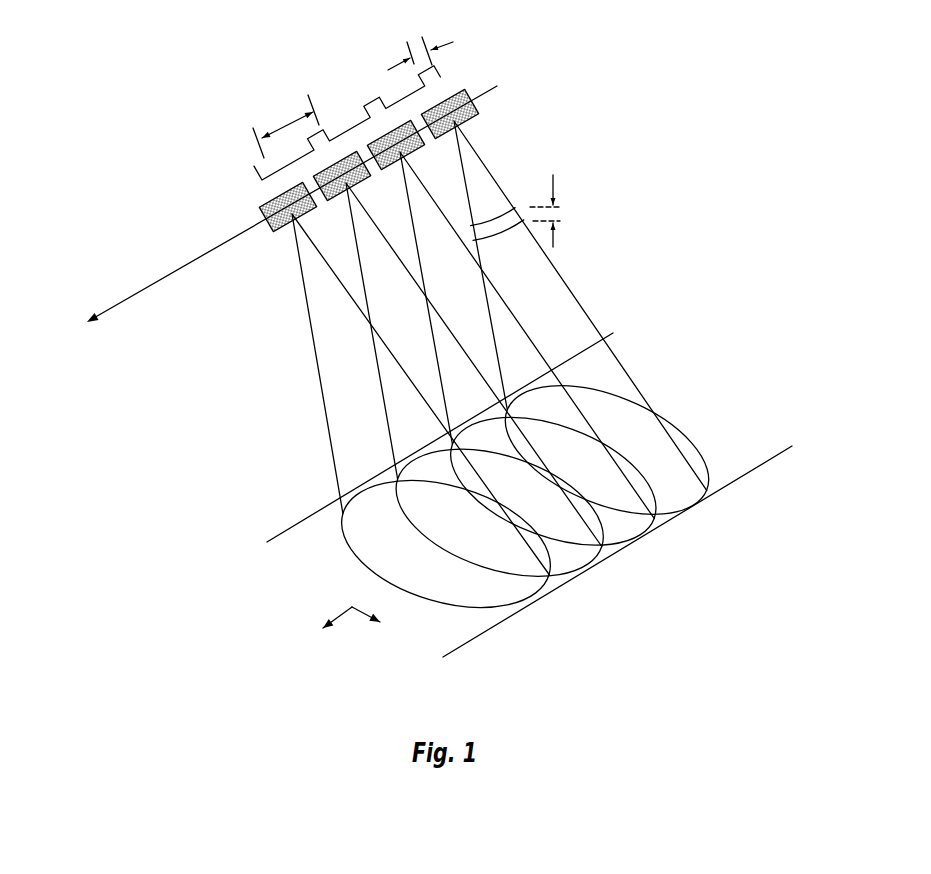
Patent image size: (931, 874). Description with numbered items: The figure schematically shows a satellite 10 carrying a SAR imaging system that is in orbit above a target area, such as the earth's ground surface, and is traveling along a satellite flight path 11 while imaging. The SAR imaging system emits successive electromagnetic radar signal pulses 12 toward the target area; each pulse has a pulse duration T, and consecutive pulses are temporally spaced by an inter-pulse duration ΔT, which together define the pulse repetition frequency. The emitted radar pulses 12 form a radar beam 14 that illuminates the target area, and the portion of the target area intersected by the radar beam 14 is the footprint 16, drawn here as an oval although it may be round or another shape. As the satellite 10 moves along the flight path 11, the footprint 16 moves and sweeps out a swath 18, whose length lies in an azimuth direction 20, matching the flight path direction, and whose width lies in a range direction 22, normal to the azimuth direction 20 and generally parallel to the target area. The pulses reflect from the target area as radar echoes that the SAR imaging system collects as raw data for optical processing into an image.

The satellite 10 is at (260, 205).
The satellite flight path 11 is at (135, 294).
The radar signal pulses 12 is at (440, 76).
The radar beam 14 is at (588, 307).
The footprint 16 is at (700, 445).
The swath 18 is at (322, 508).
The azimuth direction 20 is at (338, 613).
The range direction 22 is at (367, 615).